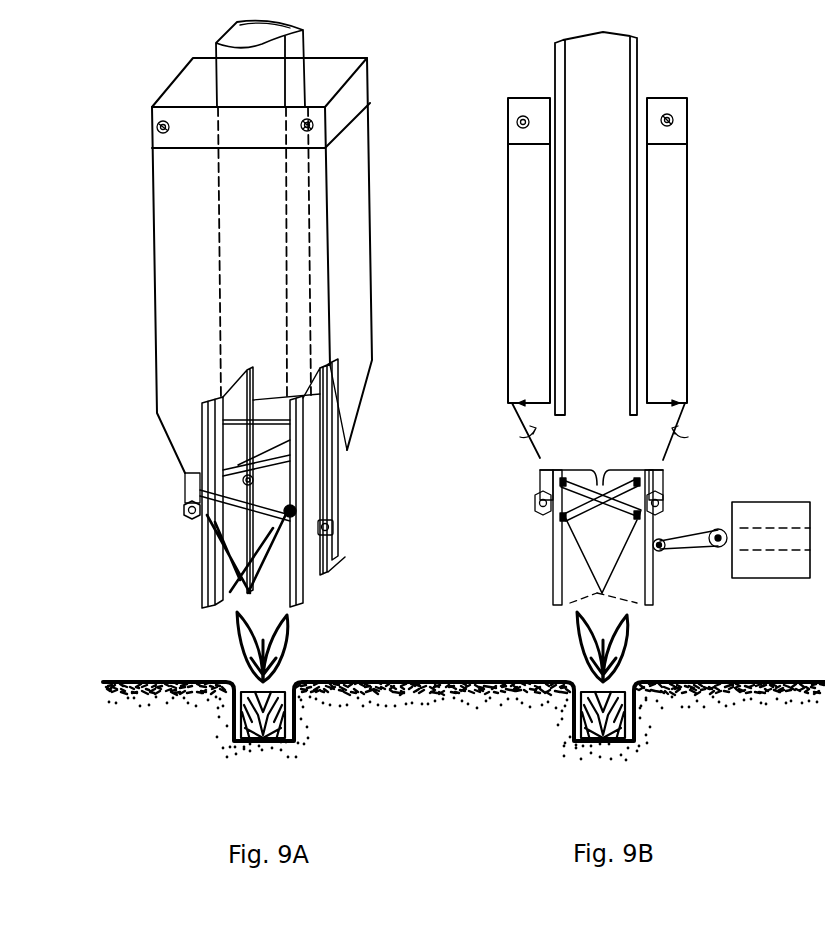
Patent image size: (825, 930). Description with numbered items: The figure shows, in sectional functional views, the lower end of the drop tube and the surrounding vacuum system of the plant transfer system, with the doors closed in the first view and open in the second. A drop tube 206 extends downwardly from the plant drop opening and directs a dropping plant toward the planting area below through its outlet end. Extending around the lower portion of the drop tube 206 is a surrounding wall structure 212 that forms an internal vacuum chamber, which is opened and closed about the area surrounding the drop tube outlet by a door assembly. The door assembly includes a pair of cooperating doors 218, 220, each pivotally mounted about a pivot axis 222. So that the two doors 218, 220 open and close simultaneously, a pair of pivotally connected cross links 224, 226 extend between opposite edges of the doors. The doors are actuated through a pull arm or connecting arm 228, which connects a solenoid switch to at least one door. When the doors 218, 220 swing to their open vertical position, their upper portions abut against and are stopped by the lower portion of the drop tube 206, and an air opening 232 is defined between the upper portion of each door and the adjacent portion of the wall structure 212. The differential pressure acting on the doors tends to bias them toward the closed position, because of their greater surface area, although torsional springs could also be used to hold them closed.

In FIG. 9A, the drop tube 206 is at (288, 267).
In FIG. 9B, the drop tube 206 is at (640, 270).
In FIG. 9A, the surrounding wall structure 212 is at (347, 190).
In FIG. 9B, the surrounding wall structure 212 is at (687, 232).
In FIG. 9A, the door 218 is at (202, 585).
In FIG. 9B, the door 218 is at (553, 563).
In FIG. 9A, the door 220 is at (313, 582).
In FIG. 9B, the door 220 is at (655, 590).
In FIG. 9A, the pivot axis 222 is at (183, 507).
In FIG. 9B, the pivot axis 222 is at (537, 503).
In FIG. 9A, the cross link 224 is at (280, 462).
In FIG. 9A, the cross link 226 is at (277, 452).
In FIG. 9B, the cross link 226 is at (663, 463).
In FIG. 9B, the connecting arm 228 is at (822, 512).
In FIG. 9A, the air opening 232 is at (470, 383).
In FIG. 9B, the air opening 232 is at (823, 378).